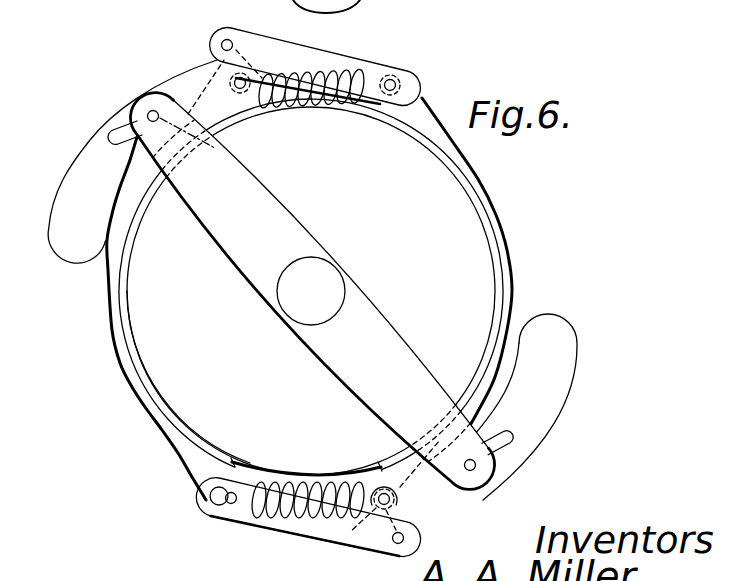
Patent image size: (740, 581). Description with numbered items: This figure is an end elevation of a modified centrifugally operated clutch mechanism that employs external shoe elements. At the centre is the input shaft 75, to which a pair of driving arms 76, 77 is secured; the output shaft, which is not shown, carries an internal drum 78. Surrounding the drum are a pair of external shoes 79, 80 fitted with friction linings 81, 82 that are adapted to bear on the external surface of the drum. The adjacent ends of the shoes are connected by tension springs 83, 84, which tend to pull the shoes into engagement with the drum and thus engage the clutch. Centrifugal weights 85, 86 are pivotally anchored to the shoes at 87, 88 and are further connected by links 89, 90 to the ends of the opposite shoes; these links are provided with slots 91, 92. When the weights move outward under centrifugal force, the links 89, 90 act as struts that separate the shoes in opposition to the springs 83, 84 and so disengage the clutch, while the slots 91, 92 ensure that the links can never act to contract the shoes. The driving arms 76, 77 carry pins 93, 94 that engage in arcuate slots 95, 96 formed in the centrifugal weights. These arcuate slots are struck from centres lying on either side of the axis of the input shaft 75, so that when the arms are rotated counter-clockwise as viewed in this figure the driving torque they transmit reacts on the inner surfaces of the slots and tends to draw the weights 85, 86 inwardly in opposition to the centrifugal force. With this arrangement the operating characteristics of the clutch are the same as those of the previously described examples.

The input shaft 75 is at (302, 305).
The driving arm 76 is at (233, 234).
The driving arm 77 is at (368, 323).
The internal drum 78 is at (170, 333).
The external shoe 79 is at (115, 327).
The external shoe 80 is at (487, 207).
The friction lining 81 is at (163, 403).
The friction lining 82 is at (448, 165).
The tension spring 83 is at (300, 83).
The tension spring 84 is at (280, 503).
The centrifugal weight 85 is at (100, 185).
The centrifugal weight 86 is at (537, 346).
The pivotal anchorage 87 is at (236, 78).
The pivotal anchorage 88 is at (413, 522).
The link 89 is at (340, 68).
The link 90 is at (353, 530).
The slot 91 is at (410, 82).
The slot 92 is at (214, 492).
The pin 93 is at (149, 112).
The pin 94 is at (480, 470).
The arcuate slot 95 is at (118, 133).
The arcuate slot 96 is at (496, 450).